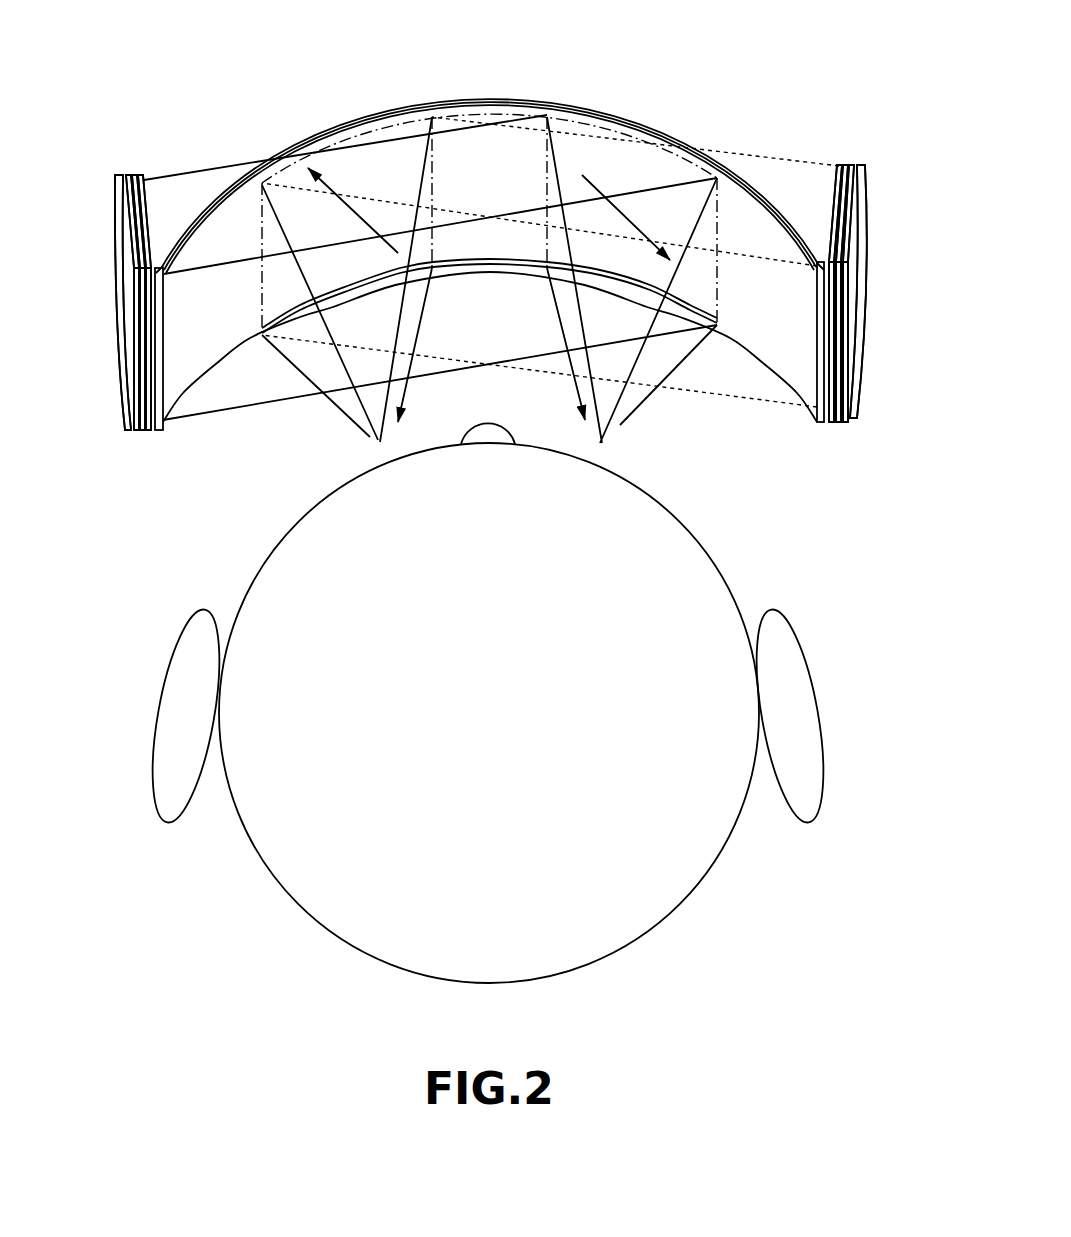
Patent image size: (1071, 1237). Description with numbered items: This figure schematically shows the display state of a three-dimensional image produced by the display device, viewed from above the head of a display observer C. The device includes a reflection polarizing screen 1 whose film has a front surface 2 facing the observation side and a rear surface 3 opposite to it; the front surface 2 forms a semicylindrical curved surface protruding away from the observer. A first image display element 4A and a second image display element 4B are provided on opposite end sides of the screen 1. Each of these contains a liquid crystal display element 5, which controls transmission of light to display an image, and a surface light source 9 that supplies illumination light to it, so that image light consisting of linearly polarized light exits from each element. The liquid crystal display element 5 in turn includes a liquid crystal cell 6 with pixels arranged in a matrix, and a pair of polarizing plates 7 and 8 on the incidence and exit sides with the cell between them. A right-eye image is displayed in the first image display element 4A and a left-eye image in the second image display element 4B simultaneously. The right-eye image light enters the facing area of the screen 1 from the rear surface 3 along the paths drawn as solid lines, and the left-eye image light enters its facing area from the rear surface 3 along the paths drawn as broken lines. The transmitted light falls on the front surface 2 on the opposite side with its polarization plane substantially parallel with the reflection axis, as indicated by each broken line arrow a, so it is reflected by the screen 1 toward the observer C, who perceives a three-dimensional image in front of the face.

The screen 1 is at (641, 121).
The front surface 2 is at (481, 248).
The rear surface 3 is at (513, 99).
The first image display element 4A is at (106, 184).
The second image display element 4B is at (876, 181).
The liquid crystal display element 5 is at (142, 434).
The liquid crystal cell 6 is at (135, 172).
The polarizing plate 7 is at (128, 172).
The polarizing plate 8 is at (141, 172).
The surface light source 9 is at (120, 318).
The broken line arrow a is at (356, 207).
The display observer C is at (718, 556).